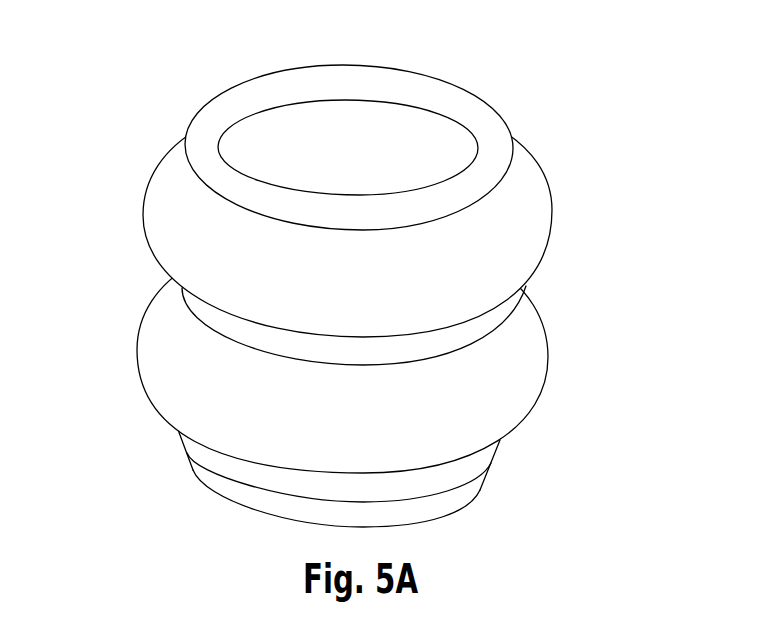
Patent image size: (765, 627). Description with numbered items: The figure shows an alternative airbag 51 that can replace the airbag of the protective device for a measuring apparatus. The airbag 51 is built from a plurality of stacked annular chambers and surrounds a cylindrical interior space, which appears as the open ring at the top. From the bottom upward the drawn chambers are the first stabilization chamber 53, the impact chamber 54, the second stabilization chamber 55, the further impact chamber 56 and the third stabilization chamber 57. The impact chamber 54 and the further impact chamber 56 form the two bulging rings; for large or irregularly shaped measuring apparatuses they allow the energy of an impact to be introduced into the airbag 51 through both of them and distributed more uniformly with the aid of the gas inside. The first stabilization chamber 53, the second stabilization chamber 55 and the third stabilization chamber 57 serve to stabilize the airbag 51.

The airbag 51 is at (347, 264).
The first stabilization chamber 53 is at (487, 450).
The impact chamber 54 is at (158, 352).
The second stabilization chamber 55 is at (487, 318).
The further impact chamber 56 is at (158, 220).
The third stabilization chamber 57 is at (492, 162).